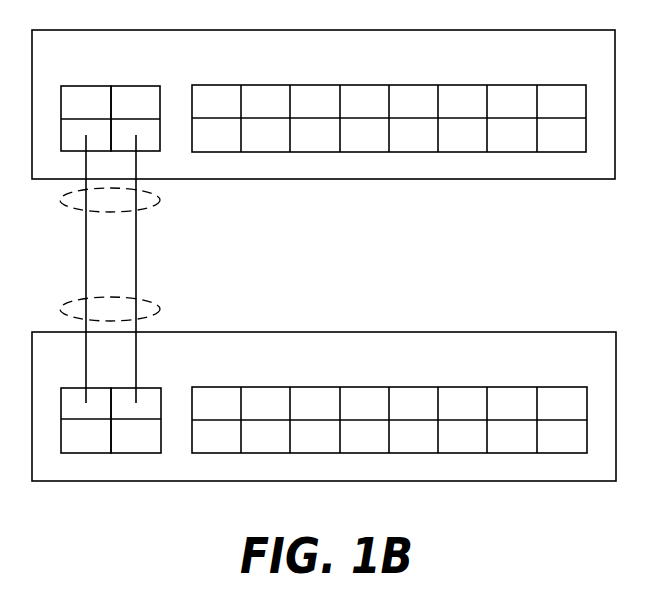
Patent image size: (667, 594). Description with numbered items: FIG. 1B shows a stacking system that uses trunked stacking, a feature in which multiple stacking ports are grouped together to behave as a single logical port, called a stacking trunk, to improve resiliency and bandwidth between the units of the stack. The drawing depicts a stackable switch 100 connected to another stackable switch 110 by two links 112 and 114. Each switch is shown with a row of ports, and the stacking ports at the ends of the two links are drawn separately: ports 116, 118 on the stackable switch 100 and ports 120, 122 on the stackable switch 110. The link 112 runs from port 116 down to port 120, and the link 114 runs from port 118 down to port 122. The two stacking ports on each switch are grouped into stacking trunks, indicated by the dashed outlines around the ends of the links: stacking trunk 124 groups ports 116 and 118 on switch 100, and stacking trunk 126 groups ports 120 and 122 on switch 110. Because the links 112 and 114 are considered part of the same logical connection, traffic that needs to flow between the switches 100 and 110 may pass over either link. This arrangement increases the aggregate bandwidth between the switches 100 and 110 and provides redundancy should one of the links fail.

The stackable switch 100 is at (428, 60).
The stackable switch 110 is at (428, 363).
The link 112 is at (86, 258).
The link 114 is at (136, 258).
The stacking port 116 is at (77, 152).
The stacking port 118 is at (146, 152).
The stacking port 120 is at (75, 388).
The stacking port 122 is at (147, 388).
The stacking trunk 124 is at (75, 203).
The stacking trunk 126 is at (150, 304).